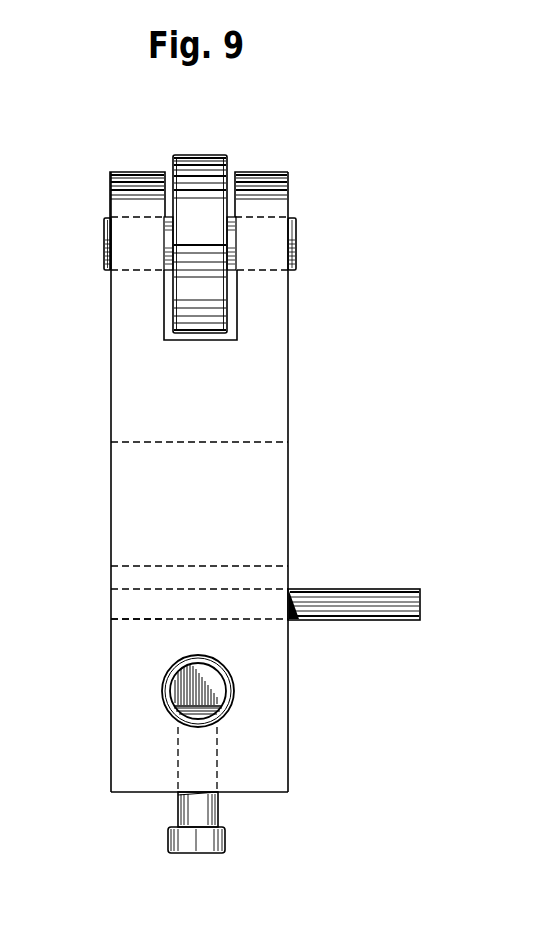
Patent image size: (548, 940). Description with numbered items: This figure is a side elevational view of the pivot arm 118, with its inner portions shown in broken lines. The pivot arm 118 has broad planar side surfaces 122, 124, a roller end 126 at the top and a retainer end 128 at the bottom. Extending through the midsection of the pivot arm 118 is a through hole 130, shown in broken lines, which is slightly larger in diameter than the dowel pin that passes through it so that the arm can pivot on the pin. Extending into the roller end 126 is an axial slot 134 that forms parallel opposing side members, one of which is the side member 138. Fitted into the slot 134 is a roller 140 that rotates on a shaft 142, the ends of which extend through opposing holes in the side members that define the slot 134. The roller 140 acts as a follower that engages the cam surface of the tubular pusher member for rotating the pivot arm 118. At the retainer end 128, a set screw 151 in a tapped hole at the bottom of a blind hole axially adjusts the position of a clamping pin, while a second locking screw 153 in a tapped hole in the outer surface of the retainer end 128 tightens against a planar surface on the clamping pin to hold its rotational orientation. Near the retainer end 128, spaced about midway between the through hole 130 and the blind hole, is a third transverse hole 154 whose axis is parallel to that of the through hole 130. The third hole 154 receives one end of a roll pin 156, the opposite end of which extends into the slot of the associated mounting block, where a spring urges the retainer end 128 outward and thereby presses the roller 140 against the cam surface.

The pivot arm 118 is at (66, 322).
The planar side surface 122 is at (111, 394).
The planar side surface 124 is at (289, 365).
The roller end 126 is at (150, 172).
The retainer end 128 is at (137, 792).
The through hole 130 is at (233, 442).
The axial slot 134 is at (228, 292).
The side member 138 is at (270, 172).
The roller 140 is at (200, 155).
The shaft 142 is at (103, 250).
The set screw 151 is at (227, 690).
The second locking screw 153 is at (205, 853).
The third transverse hole 154 is at (142, 619).
The roll pin 156 is at (367, 620).